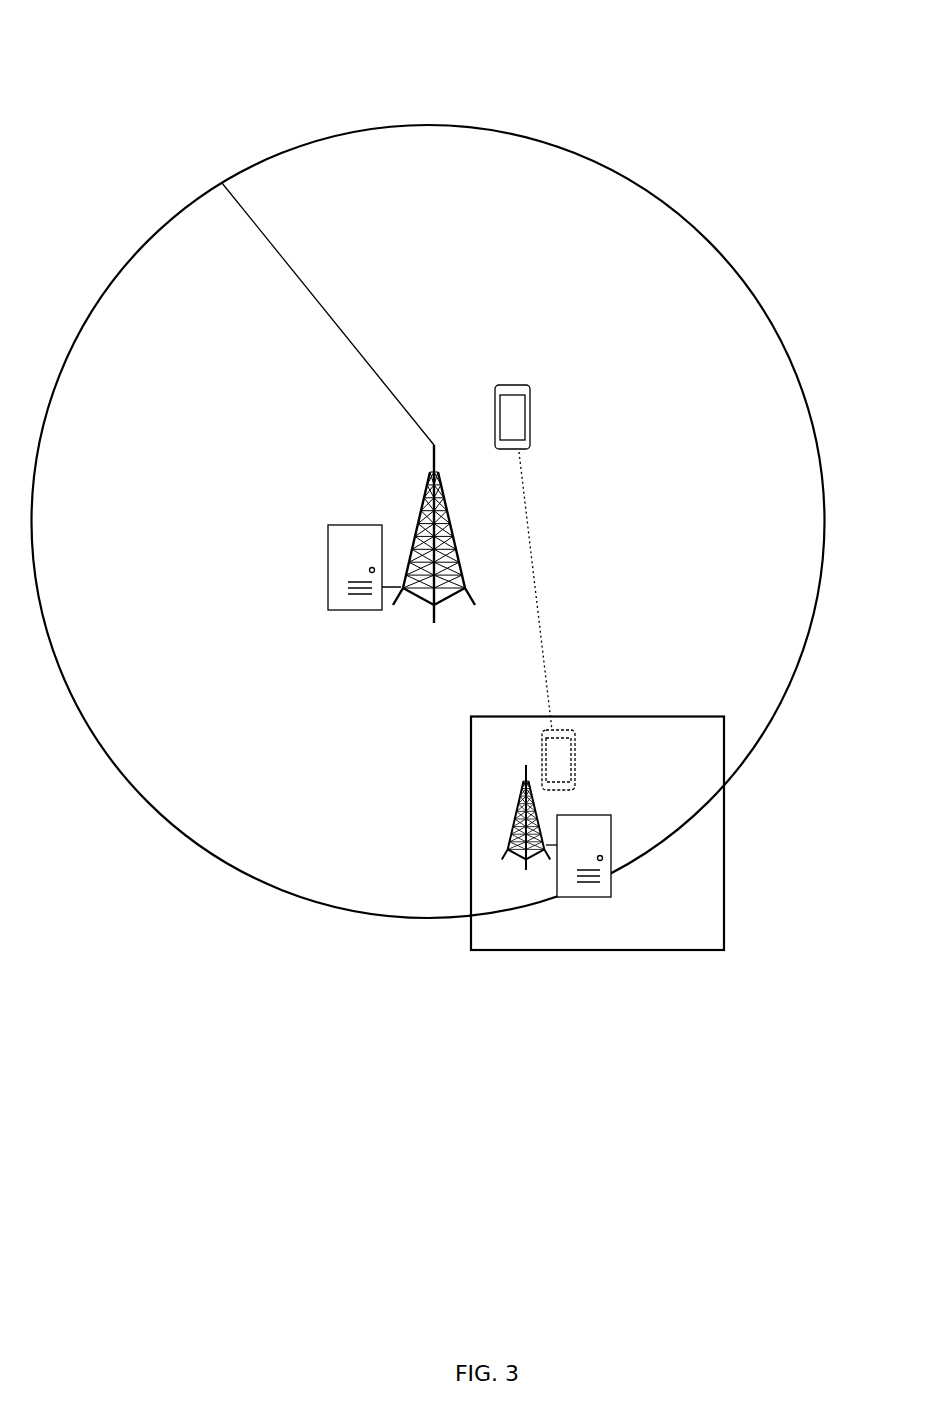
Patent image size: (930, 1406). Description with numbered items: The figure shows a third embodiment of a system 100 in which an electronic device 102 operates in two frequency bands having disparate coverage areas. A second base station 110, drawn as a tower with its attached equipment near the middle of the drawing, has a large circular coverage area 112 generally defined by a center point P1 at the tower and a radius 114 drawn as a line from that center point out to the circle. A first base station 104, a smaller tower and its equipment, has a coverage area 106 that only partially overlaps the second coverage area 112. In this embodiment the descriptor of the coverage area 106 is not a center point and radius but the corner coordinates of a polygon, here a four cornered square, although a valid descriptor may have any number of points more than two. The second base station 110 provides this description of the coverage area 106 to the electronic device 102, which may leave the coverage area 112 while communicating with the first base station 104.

The system 100 is at (502, 28).
The electronic device 102 is at (531, 418).
The first base station 104 is at (612, 832).
The coverage area 106 is at (470, 778).
The second base station 110 is at (355, 523).
The coverage area 112 is at (592, 160).
The radius 114 is at (330, 315).
The center point P1 is at (432, 457).